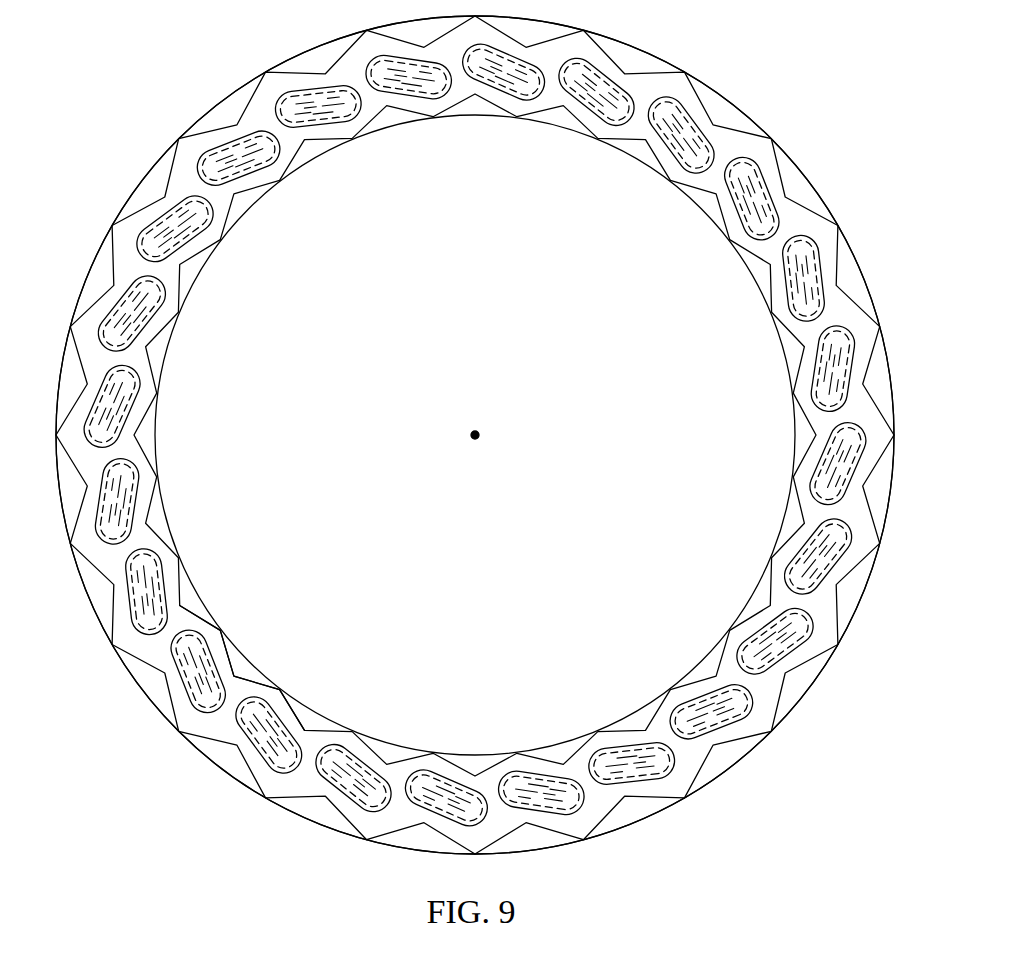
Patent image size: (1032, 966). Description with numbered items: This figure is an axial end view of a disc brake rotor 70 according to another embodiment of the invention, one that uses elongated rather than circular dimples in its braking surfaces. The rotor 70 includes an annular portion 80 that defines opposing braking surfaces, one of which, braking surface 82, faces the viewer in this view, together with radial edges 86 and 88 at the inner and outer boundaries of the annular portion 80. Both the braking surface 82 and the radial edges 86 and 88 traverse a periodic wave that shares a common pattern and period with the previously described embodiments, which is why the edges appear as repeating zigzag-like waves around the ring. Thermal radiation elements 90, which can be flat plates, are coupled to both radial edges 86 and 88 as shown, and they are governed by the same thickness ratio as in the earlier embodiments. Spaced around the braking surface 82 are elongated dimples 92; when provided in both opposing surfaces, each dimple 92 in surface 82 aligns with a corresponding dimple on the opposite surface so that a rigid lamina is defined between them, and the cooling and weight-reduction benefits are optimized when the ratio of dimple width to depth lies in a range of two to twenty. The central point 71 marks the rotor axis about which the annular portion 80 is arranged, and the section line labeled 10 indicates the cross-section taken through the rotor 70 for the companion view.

The section line 10- 10 is at (925, 317).
The disc brake rotor 70 is at (95, 120).
The rotor axis 71 is at (477, 421).
The annular portion 80 is at (178, 558).
The braking surface 82 is at (138, 358).
The radial edge 86 is at (180, 605).
The radial edge 88 is at (172, 702).
The thermal radiation elements 90 is at (243, 202).
The elongated dimples 92 is at (153, 293).